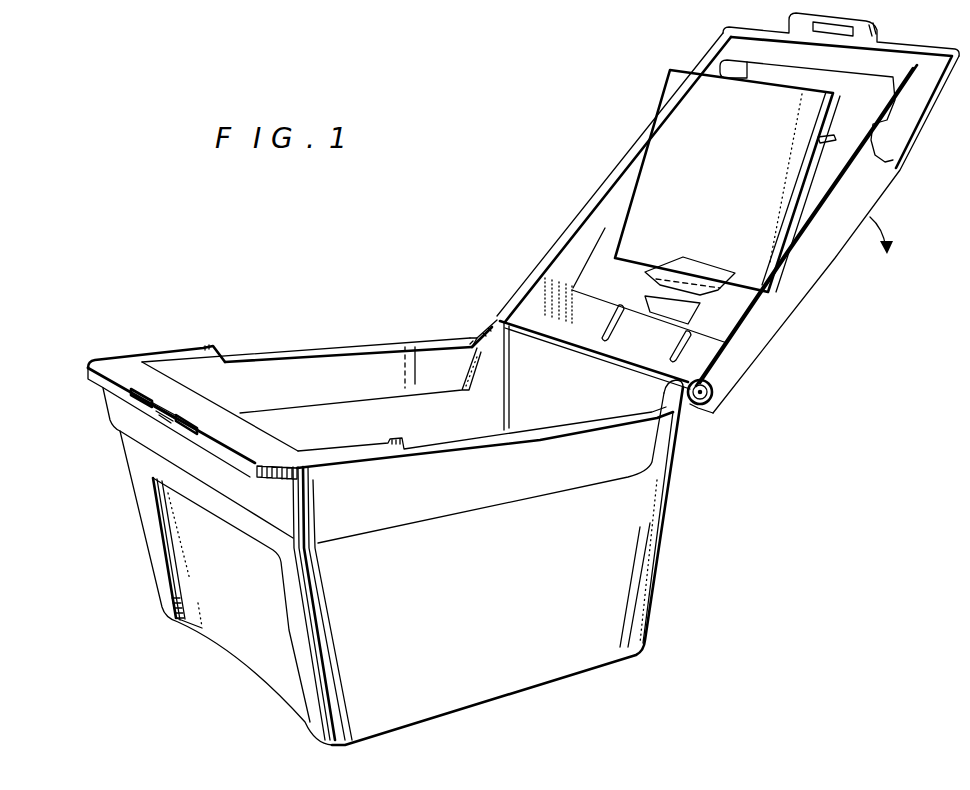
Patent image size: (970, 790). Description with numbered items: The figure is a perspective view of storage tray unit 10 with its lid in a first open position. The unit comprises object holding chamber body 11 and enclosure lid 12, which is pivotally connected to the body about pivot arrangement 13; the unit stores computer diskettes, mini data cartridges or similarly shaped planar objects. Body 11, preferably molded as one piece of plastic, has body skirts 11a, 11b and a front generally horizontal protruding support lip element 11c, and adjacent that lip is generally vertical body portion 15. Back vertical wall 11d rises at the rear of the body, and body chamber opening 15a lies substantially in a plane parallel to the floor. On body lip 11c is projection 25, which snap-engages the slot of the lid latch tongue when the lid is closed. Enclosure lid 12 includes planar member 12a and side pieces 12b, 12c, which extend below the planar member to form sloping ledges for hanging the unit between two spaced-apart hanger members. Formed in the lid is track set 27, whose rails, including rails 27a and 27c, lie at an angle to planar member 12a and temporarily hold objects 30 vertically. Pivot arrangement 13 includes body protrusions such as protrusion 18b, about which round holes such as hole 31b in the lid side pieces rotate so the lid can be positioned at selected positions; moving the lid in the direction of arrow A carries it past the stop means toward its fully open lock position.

The storage tray unit 10 is at (358, 332).
The object holding chamber body 11 is at (297, 382).
The body skirt 11a is at (556, 487).
The body skirt 11b is at (412, 342).
The front generally horizontal protruding support lip element 11c is at (112, 361).
The back vertical wall 11d is at (576, 404).
The enclosure lid 12 is at (897, 198).
The planar member 12a is at (905, 66).
The side piece 12b is at (779, 300).
The side piece 12c is at (598, 232).
The pivot arrangement 13 is at (700, 430).
The generally vertical body portion 15 is at (273, 507).
The body chamber opening 15a is at (458, 425).
The chamber body protrusion 18b is at (712, 387).
The projection 25 is at (160, 412).
The track set 27 is at (703, 230).
The rail 27a is at (711, 276).
The rail 27c is at (675, 304).
The object 30 is at (734, 168).
The round hole 31b is at (717, 405).